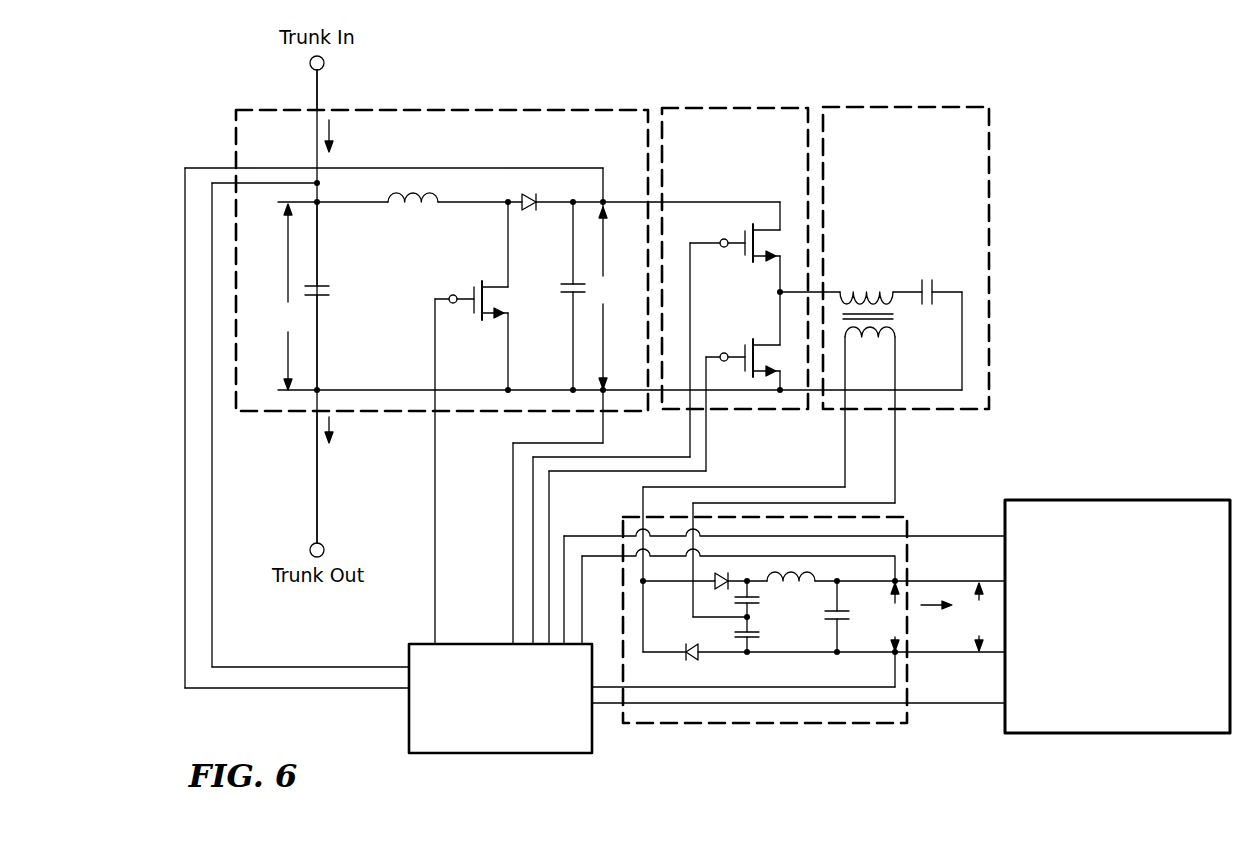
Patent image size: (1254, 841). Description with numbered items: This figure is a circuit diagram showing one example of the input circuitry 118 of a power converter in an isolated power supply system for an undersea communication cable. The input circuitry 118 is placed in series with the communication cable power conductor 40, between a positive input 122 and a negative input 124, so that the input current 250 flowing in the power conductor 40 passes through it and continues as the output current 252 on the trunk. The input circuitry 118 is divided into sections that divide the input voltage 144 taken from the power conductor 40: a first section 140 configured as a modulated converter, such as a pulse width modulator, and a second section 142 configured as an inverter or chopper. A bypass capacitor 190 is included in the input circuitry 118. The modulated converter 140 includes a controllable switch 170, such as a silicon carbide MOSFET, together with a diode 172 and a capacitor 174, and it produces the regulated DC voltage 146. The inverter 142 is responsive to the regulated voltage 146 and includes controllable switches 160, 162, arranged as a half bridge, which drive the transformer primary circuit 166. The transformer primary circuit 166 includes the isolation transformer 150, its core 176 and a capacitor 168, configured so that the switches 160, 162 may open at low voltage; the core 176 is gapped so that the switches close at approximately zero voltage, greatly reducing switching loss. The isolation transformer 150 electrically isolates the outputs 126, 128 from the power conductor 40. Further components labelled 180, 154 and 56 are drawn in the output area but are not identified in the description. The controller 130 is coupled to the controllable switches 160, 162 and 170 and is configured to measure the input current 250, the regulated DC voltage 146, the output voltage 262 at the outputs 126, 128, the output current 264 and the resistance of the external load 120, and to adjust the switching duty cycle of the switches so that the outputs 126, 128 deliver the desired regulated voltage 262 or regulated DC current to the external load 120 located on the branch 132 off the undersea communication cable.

The communication cable power conductor 40 is at (317, 80).
The positive input 122 is at (318, 98).
The negative input 124 is at (317, 487).
The input current 250 is at (360, 133).
The output current 252 is at (351, 460).
The input circuitry 118 is at (612, 223).
The modulated converter 140 is at (540, 139).
The inverter 142 is at (791, 139).
The transformer primary circuit 166 is at (974, 139).
The input voltage 144 is at (277, 320).
The bypass capacitor 190 is at (331, 288).
The boost converter 180 is at (470, 217).
The diode 172 is at (528, 209).
The controllable switch 170 is at (478, 282).
The capacitor 174 is at (558, 290).
The regulated DC voltage 146 is at (605, 276).
The controllable switch 160 is at (748, 232).
The controllable switch 162 is at (748, 345).
The transformer core 176 is at (863, 371).
The isolation transformer 150 is at (906, 320).
The capacitor 168 is at (933, 277).
The controller 130 is at (484, 722).
The branch 132 is at (835, 601).
The output 126 is at (951, 533).
The rectifier diode 154 is at (693, 607).
The output capacitor 56 is at (848, 614).
The output 128 is at (942, 654).
The output current 264 is at (923, 634).
The output voltage 262 is at (990, 634).
The external load 120 is at (1101, 722).